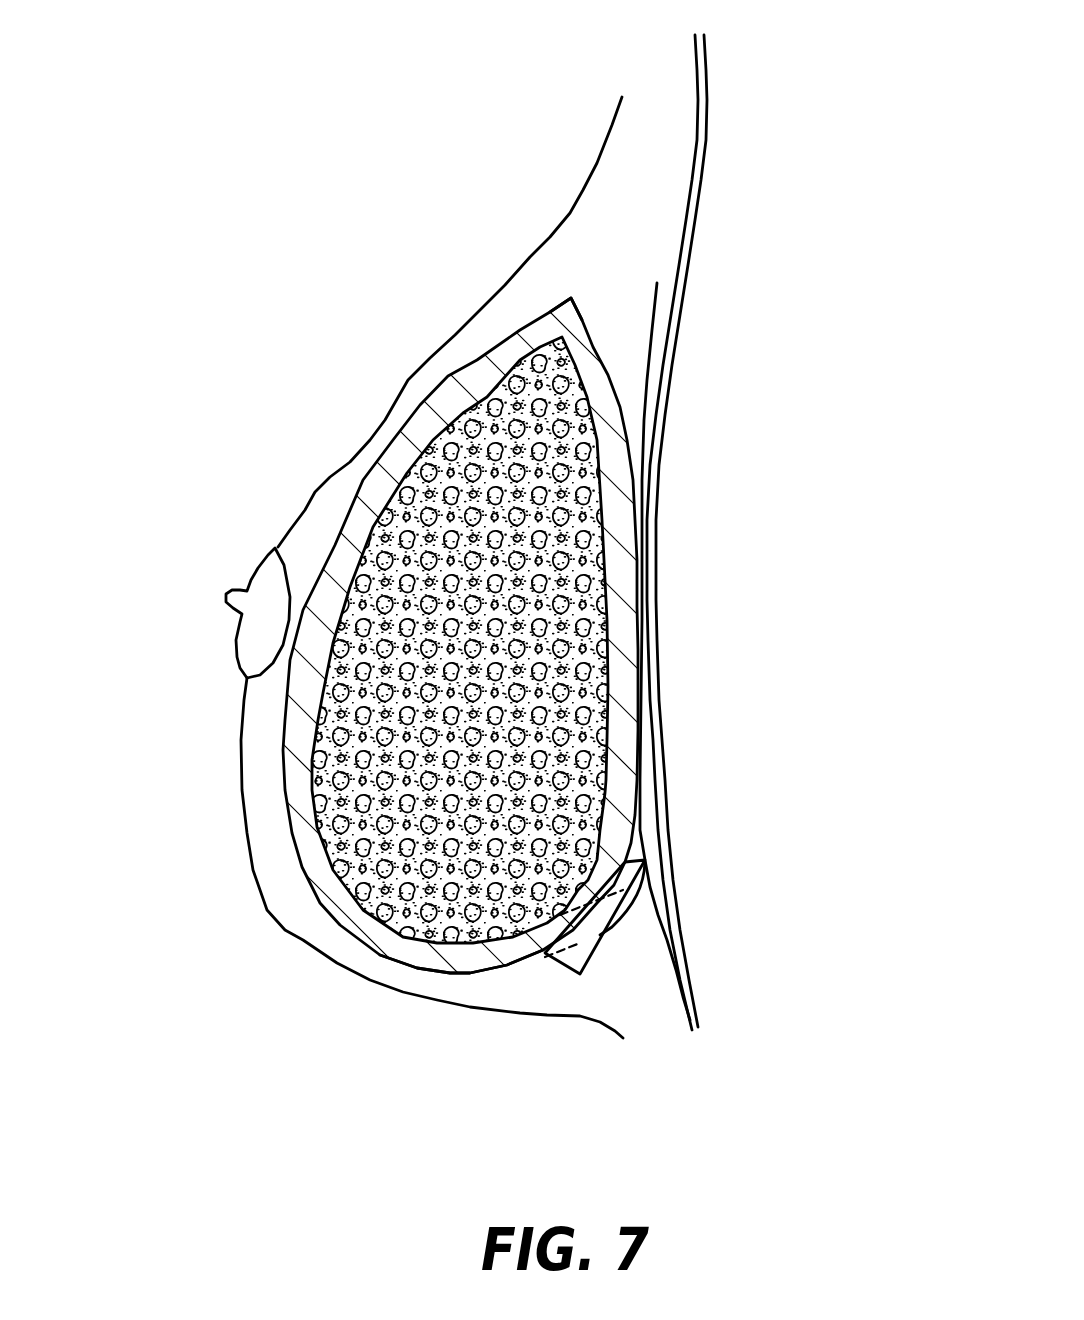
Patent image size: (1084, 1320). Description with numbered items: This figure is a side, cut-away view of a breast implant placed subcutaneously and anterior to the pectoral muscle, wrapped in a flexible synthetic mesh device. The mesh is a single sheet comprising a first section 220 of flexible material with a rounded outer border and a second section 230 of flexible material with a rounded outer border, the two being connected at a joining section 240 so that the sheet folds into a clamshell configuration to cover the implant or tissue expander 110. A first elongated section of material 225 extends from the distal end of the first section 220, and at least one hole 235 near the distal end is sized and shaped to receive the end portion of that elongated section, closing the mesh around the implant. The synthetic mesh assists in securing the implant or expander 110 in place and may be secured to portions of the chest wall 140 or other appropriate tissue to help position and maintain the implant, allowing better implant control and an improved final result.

The implant or tissue expander 110 is at (367, 533).
The chest wall 140 is at (672, 337).
The first section of flexible material 220 is at (408, 425).
The first elongated section of material 225 is at (490, 978).
The second section of flexible material 230 is at (627, 637).
The hole 235 is at (568, 957).
The joining section 240 is at (559, 316).